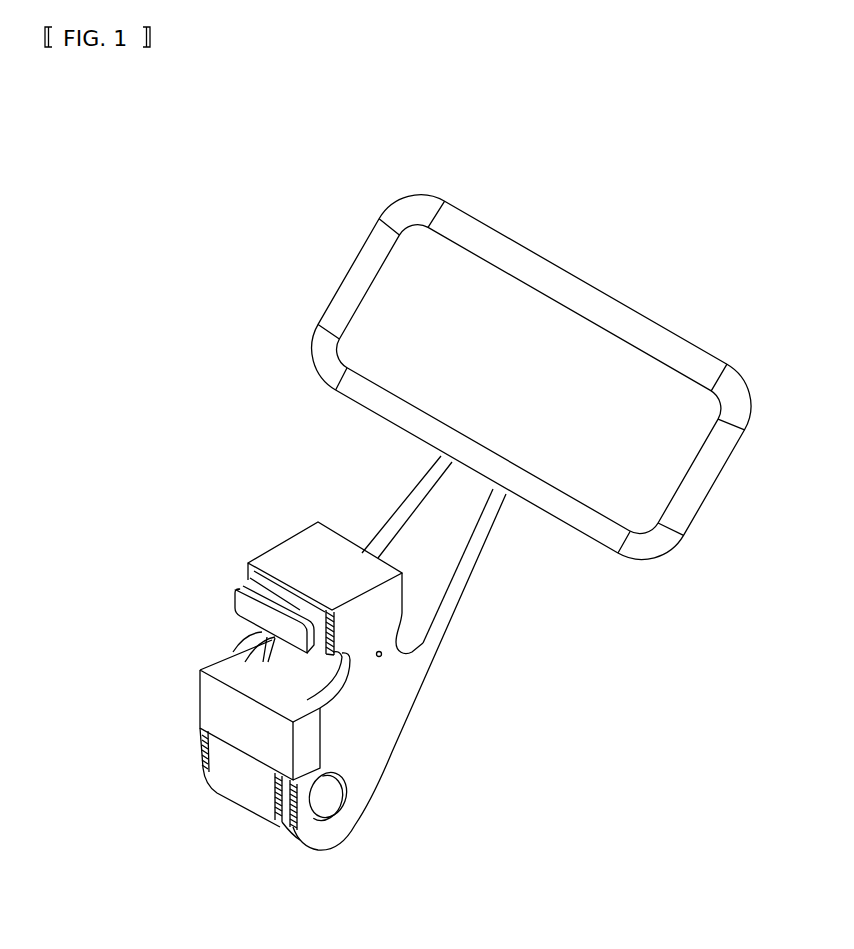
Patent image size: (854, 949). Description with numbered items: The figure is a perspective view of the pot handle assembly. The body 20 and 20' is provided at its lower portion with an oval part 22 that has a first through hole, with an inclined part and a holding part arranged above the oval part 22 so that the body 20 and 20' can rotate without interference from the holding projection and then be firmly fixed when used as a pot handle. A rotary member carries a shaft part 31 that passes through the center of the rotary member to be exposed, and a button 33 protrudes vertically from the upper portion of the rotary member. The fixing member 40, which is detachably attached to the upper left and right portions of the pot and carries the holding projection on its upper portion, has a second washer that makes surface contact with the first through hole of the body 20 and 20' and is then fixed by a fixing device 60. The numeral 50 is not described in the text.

The body 20' is at (399, 653).
The oval part 22 is at (246, 567).
The button 33 is at (258, 612).
The body 20 is at (194, 647).
The lower block 50 is at (218, 708).
The fixing member 40 is at (245, 788).
The fixing device 60 is at (333, 800).
The shaft part 31 is at (382, 654).